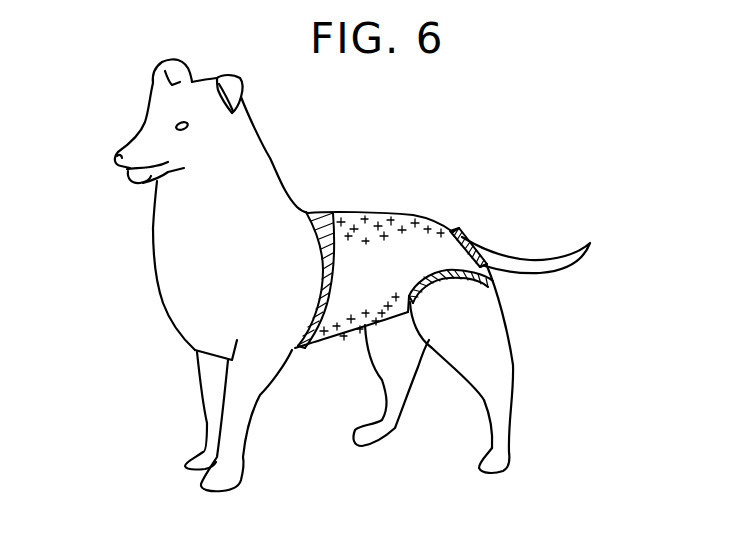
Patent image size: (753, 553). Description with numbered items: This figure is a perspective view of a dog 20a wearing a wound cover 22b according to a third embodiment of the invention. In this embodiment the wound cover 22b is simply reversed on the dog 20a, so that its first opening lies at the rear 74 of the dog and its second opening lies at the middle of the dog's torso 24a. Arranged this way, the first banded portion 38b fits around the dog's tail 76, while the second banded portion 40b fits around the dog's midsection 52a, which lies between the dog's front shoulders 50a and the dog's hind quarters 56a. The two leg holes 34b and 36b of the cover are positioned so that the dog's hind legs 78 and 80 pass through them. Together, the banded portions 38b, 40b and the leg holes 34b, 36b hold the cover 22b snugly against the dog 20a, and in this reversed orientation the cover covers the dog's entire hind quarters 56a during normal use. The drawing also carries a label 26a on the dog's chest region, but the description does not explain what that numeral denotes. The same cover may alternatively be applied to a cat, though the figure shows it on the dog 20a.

The dog 20a is at (445, 256).
The wound cover 22b is at (411, 206).
The torso 24a is at (360, 194).
The dog 26a is at (148, 260).
The leg hole 34b is at (390, 337).
The leg hole 36b is at (460, 285).
The first banded portion 38b is at (487, 227).
The second banded portion 40b is at (331, 213).
The front shoulders 50a is at (285, 369).
The midsection 52a is at (384, 196).
The hind quarters 56a is at (463, 218).
The rear 74 is at (481, 235).
The tail 76 is at (547, 262).
The hind leg 78 is at (493, 375).
The hind leg 80 is at (407, 387).